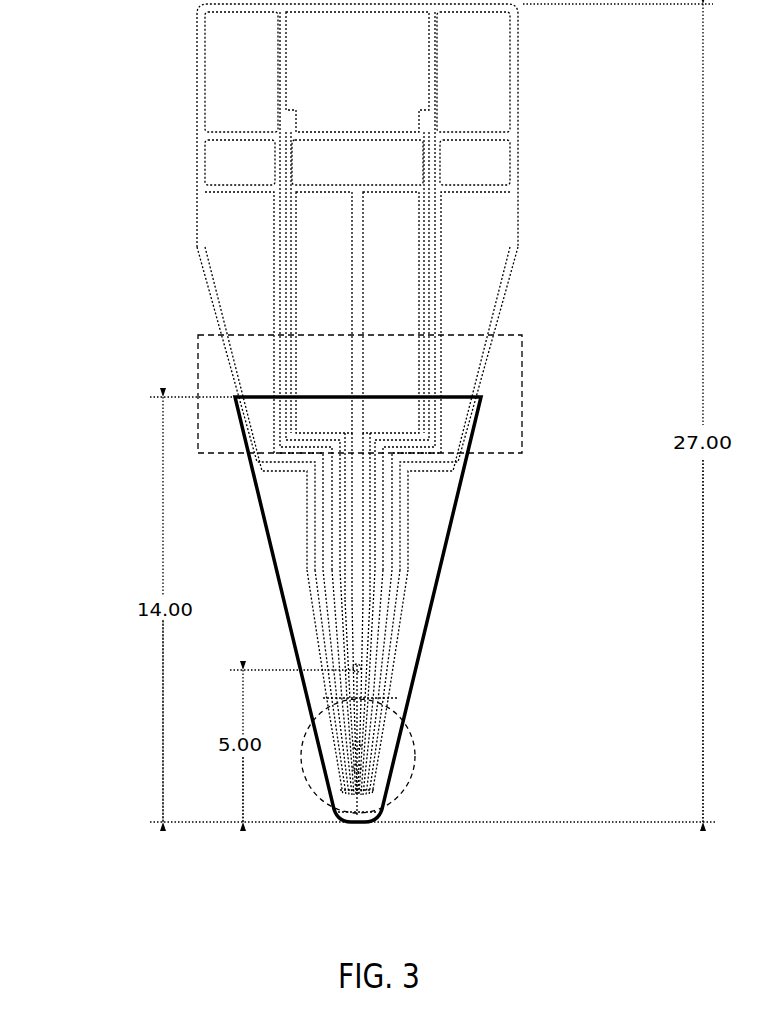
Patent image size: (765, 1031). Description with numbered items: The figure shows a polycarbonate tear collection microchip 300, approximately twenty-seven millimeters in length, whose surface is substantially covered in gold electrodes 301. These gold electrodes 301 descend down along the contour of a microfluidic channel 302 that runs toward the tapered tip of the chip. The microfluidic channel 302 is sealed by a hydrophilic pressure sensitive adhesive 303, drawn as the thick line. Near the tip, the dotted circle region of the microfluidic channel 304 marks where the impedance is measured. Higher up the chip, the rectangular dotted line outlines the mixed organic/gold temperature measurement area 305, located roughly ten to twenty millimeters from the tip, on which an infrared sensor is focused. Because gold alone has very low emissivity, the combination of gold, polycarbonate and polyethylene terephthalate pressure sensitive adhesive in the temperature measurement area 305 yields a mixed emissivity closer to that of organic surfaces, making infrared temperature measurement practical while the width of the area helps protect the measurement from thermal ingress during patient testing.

The polycarbonate tear collection microchip 300 is at (163, 92).
The gold electrodes 301 is at (313, 285).
The microfluidic channel 302 is at (353, 692).
The hydrophilic pressure sensitive adhesive 303 is at (327, 770).
The dotted circle region of the microfluidic channel 304 is at (435, 730).
The mixed organic/gold temperature measurement area 305 is at (550, 387).